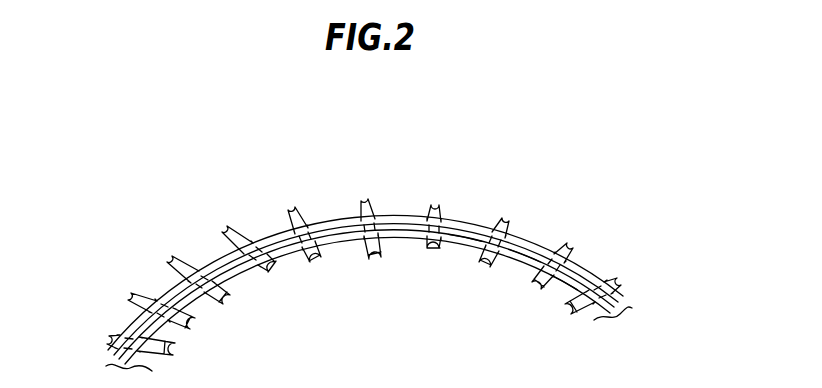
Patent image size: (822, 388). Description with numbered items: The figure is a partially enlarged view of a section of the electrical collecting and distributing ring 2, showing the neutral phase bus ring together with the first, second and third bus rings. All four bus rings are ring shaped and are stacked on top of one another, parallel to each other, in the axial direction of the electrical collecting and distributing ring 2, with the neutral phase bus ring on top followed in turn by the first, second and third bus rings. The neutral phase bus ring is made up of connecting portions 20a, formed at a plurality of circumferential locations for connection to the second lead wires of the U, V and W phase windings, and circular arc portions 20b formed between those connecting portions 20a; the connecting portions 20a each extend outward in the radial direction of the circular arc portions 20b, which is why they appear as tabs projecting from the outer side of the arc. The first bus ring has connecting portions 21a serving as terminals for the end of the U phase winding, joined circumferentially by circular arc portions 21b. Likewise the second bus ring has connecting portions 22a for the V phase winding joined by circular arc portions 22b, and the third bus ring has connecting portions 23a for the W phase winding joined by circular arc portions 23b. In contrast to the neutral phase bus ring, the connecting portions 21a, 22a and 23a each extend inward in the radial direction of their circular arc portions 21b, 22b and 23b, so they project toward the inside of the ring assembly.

The electrical collecting and distributing ring 2 is at (679, 150).
The connecting portions 20a is at (293, 205).
The circular arc portions 20b is at (462, 229).
The connecting portions 21a is at (270, 273).
The connecting portions 22a is at (322, 263).
The connecting portions 23a is at (377, 262).
The circular arc portions 21b is at (465, 234).
The circular arc portions 22b is at (524, 258).
The circular arc portions 23b is at (565, 291).